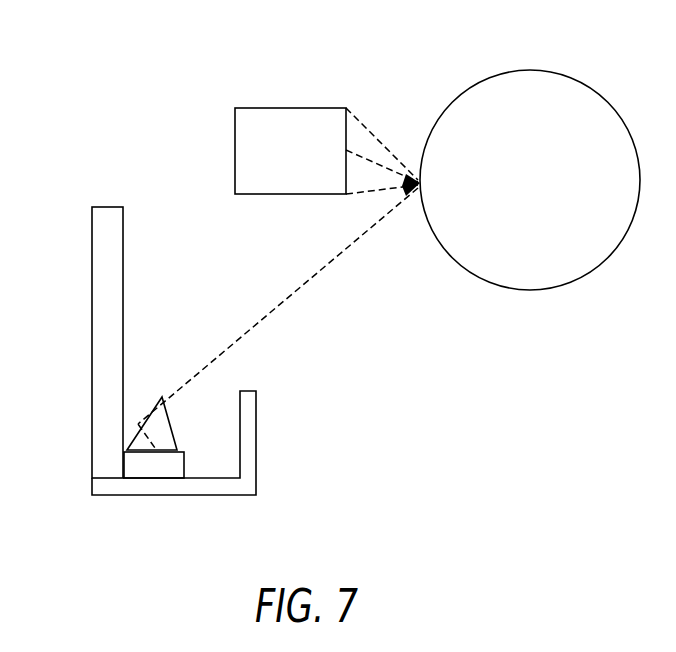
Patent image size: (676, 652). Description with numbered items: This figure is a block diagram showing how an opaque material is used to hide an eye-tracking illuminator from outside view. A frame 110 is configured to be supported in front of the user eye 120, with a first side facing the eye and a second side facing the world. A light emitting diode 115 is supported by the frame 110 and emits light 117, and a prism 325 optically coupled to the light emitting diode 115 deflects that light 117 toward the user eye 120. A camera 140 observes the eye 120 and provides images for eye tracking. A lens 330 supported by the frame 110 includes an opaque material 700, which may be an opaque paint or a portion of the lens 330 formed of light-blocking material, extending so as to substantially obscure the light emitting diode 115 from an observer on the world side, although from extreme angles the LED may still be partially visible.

The opaque material 700 is at (140, 370).
The lens 330 is at (92, 233).
The frame 110 is at (104, 496).
The light emitting diode 115 is at (185, 462).
The prism 325 is at (168, 422).
The camera 140 is at (282, 108).
The user eye 120 is at (532, 68).
The light 117 is at (312, 277).